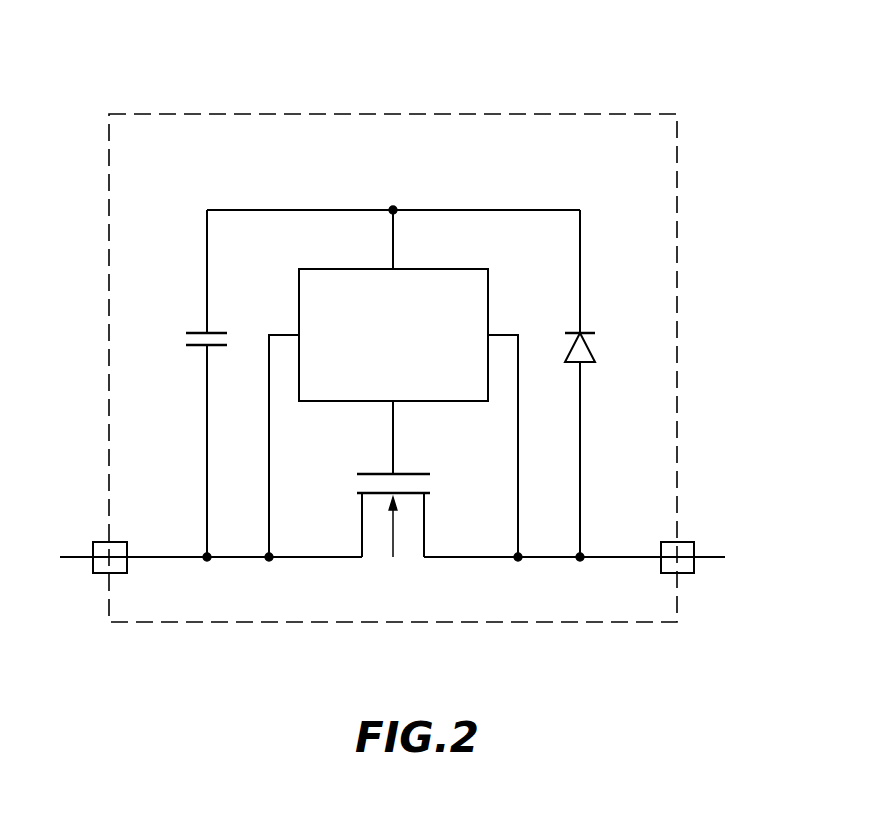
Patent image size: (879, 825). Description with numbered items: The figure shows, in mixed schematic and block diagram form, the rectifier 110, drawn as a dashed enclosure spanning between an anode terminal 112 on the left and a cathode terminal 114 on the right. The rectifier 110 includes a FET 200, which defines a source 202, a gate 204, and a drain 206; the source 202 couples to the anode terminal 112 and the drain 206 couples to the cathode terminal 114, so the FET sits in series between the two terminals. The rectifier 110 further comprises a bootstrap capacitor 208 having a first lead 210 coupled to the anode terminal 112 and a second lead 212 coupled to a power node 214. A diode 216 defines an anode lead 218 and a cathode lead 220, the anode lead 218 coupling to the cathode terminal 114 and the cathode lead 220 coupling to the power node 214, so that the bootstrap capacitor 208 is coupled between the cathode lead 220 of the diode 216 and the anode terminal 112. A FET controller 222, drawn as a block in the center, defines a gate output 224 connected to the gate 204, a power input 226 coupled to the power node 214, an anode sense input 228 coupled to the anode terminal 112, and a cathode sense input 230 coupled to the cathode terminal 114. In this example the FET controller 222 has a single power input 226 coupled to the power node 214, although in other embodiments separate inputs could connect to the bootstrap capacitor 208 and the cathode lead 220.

The rectifier 110 is at (157, 112).
The anode terminal 112 is at (110, 540).
The cathode terminal 114 is at (677, 540).
The FET 200 is at (420, 548).
The source 202 is at (317, 557).
The gate 204 is at (395, 472).
The drain 206 is at (497, 557).
The bootstrap capacitor 208 is at (132, 385).
The first lead 210 is at (175, 383).
The second lead 212 is at (203, 331).
The power node 214 is at (393, 210).
The diode 216 is at (665, 385).
The anode lead 218 is at (583, 363).
The cathode lead 220 is at (583, 331).
The FET controller 222 is at (457, 268).
The gate output 224 is at (393, 402).
The power input 226 is at (390, 268).
The anode sense input 228 is at (298, 333).
The cathode sense input 230 is at (496, 331).